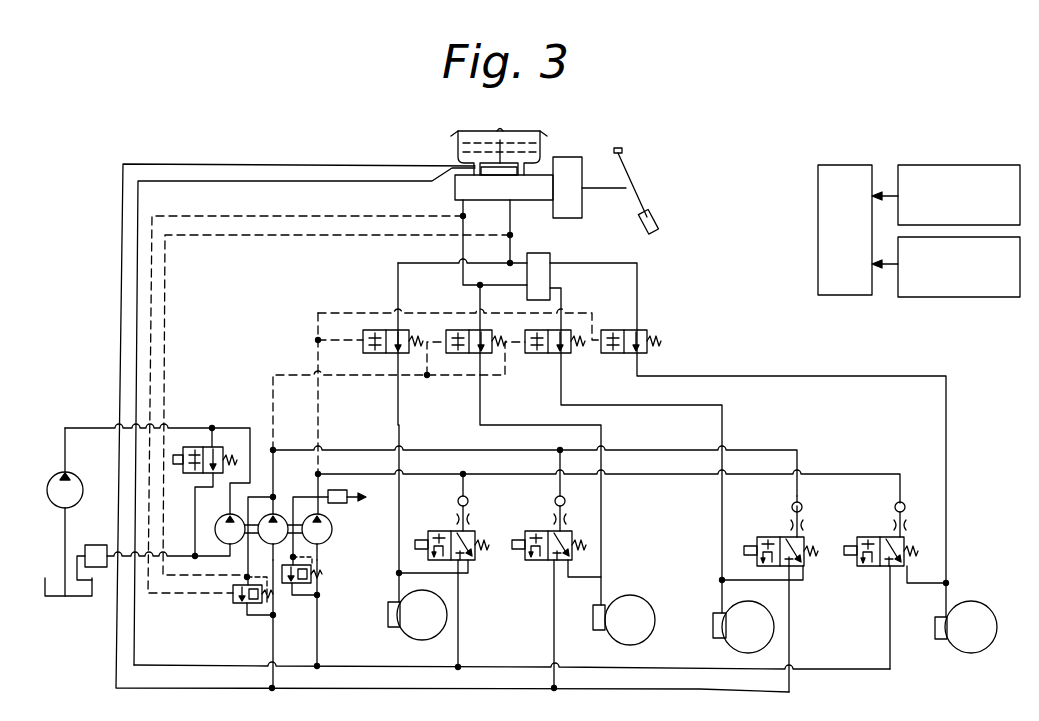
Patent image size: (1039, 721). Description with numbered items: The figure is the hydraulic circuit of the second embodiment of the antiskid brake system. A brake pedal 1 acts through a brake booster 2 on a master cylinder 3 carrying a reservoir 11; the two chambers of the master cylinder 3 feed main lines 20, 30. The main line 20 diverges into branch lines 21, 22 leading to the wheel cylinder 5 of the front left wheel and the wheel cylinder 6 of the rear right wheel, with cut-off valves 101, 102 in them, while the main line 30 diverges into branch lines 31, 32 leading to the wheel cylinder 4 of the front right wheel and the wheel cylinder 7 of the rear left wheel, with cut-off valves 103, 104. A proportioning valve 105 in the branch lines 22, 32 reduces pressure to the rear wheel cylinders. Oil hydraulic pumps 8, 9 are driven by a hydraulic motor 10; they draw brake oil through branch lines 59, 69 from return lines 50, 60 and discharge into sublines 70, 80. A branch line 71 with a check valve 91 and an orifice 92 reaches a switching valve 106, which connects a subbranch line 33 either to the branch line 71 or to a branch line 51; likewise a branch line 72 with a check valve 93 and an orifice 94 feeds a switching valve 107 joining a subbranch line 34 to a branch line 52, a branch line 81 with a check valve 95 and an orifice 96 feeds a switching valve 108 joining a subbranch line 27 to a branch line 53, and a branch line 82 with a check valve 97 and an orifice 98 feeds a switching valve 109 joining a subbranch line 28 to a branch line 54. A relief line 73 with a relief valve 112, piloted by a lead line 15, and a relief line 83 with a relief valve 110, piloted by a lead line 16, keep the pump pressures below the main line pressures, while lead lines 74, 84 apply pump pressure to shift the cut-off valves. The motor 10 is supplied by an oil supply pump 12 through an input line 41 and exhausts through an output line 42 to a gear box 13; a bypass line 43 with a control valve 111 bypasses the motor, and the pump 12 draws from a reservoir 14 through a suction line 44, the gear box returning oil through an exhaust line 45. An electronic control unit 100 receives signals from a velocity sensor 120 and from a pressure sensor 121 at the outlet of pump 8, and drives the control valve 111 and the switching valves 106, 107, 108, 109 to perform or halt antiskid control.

The brake pedal 1 is at (658, 221).
The brake booster 2 is at (584, 206).
The master cylinder 3 is at (545, 178).
The wheel cylinder 4 is at (407, 643).
The wheel cylinder 5 is at (610, 642).
The wheel cylinder 6 is at (725, 646).
The wheel cylinder 7 is at (951, 650).
The oil hydraulic pump 8 is at (338, 540).
The oil hydraulic pump 9 is at (255, 537).
The oil hydraulic motor 10 is at (221, 541).
The reservoir 11 is at (524, 146).
The oil supply pump 12 is at (55, 470).
The gear box 13 is at (97, 545).
The reservoir 14 is at (65, 598).
The lead line 15 is at (166, 355).
The lead line 16 is at (153, 324).
The main line 20 is at (476, 248).
The branch line 21 is at (518, 425).
The branch line 22 is at (648, 405).
The subbranch line 27 is at (580, 577).
The subbranch line 28 is at (770, 583).
The main line 30 is at (510, 233).
The branch line 31 is at (400, 400).
The branch line 32 is at (812, 376).
The subbranch line 33 is at (399, 573).
The subbranch line 34 is at (918, 617).
The input line 41 is at (186, 428).
The output line 42 is at (178, 556).
The bypass line 43 is at (197, 521).
The suction line 44 is at (64, 541).
The exhaust line 45 is at (98, 580).
The return line 50 is at (312, 181).
The branch line 51 is at (458, 648).
The branch line 52 is at (890, 653).
The branch line 53 is at (553, 639).
The branch line 54 is at (790, 640).
The branch line 59 is at (320, 636).
The return line 60 is at (291, 164).
The branch line 69 is at (275, 642).
The subline 70 is at (542, 511).
The branch line 71 is at (470, 488).
The branch line 72 is at (906, 482).
The relief line 73 is at (294, 596).
The lead line 74 is at (318, 393).
The subline 80 is at (446, 450).
The branch line 81 is at (567, 487).
The branch line 82 is at (803, 487).
The relief line 83 is at (252, 616).
The lead line 84 is at (299, 413).
The check valve 91 is at (468, 504).
The orifice 92 is at (471, 522).
The check valve 93 is at (905, 508).
The orifice 94 is at (907, 530).
The check valve 95 is at (566, 505).
The orifice 96 is at (570, 524).
The check valve 97 is at (802, 509).
The orifice 98 is at (806, 528).
The electronic control unit 100 is at (845, 165).
The cut-off valve 101 is at (468, 354).
The cut-off valve 102 is at (541, 354).
The cut-off valve 103 is at (407, 328).
The cut-off valve 104 is at (610, 354).
The proportioning valve 105 is at (552, 258).
The switching valve 106 is at (436, 532).
The switching valve 107 is at (870, 566).
The switching valve 108 is at (532, 562).
The switching valve 109 is at (758, 543).
The relief valve 110 is at (234, 603).
The control valve 111 is at (208, 447).
The relief valve 112 is at (311, 573).
The velocity sensor 120 is at (970, 165).
The pressure sensor 121 is at (346, 503).